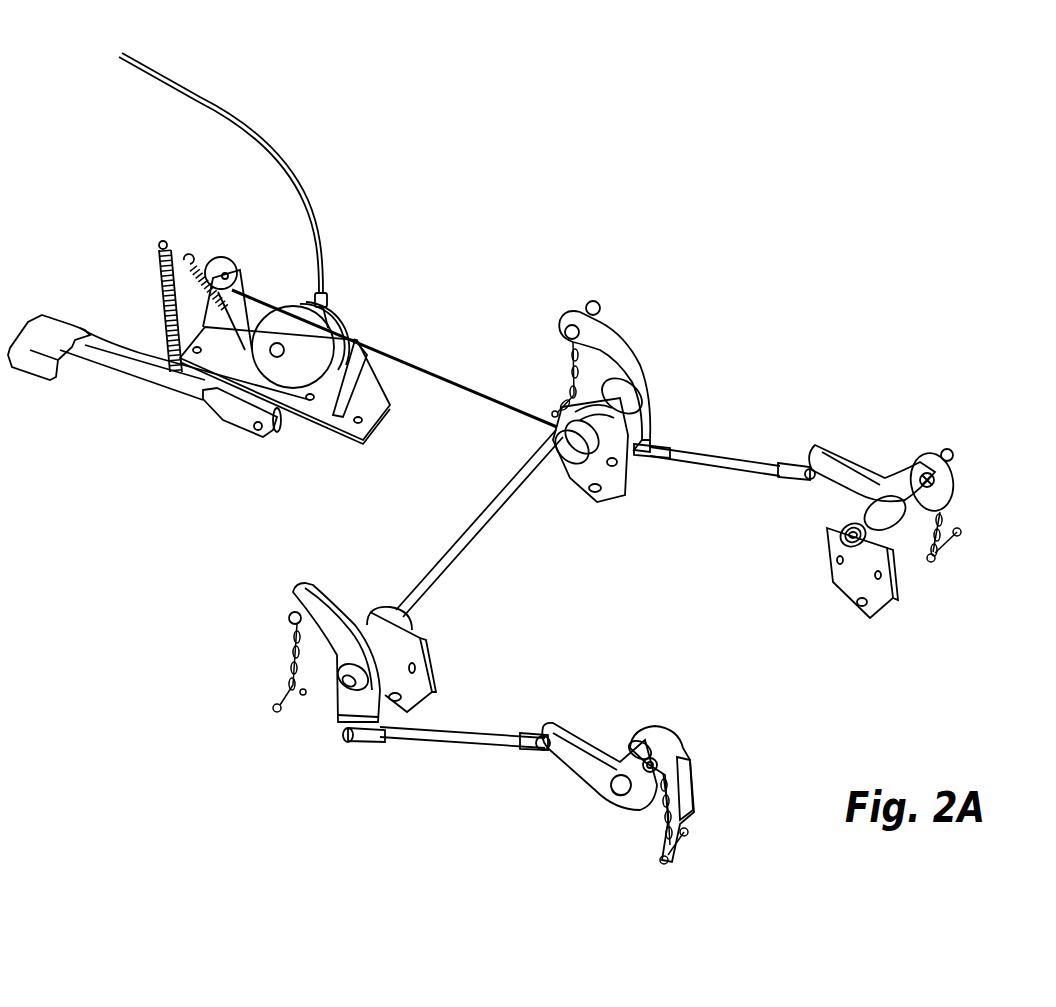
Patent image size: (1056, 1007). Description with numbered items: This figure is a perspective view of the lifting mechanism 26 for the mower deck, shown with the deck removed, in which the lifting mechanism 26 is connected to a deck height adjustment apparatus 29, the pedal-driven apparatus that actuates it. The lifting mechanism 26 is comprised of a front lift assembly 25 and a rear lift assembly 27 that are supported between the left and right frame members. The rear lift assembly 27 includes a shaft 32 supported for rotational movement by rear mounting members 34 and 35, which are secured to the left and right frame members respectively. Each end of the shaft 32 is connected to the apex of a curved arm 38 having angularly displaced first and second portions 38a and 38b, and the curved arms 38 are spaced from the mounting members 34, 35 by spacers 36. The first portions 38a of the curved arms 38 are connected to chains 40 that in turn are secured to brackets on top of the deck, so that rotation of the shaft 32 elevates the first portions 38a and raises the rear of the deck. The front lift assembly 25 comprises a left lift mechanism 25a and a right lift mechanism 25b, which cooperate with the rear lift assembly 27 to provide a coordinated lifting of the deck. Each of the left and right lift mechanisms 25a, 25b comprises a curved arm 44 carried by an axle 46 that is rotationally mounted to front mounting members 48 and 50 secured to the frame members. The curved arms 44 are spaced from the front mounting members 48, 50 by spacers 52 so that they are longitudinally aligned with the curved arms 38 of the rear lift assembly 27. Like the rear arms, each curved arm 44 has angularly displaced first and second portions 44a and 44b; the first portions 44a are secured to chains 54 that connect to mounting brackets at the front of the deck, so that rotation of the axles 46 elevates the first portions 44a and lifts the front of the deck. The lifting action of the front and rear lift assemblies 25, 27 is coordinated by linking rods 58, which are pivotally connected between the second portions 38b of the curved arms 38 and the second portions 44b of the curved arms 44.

The front lift assembly 25 is at (825, 622).
The left lift mechanism 25a is at (955, 372).
The right lift mechanism 25b is at (578, 820).
The lifting mechanism 26 is at (896, 318).
The rear lift assembly 27 is at (502, 448).
The deck height adjustment apparatus 29 is at (188, 433).
The shaft 32 is at (503, 523).
The rear mounting member 34 is at (613, 490).
The rear mounting member 35 is at (417, 643).
The spacer 36 is at (617, 398).
The curved arm 38 is at (505, 532).
The first portion 38a is at (595, 342).
The second portion 38b is at (635, 430).
The chain 40 is at (565, 380).
The curved arm 44 is at (741, 627).
The first portion 44a is at (907, 503).
The second portion 44b is at (840, 480).
The axle 46 is at (830, 530).
The front mounting member 48 is at (875, 607).
The front mounting member 50 is at (682, 800).
The spacer 52 is at (877, 513).
The chain 54 is at (953, 507).
The linking rod 58 is at (755, 460).